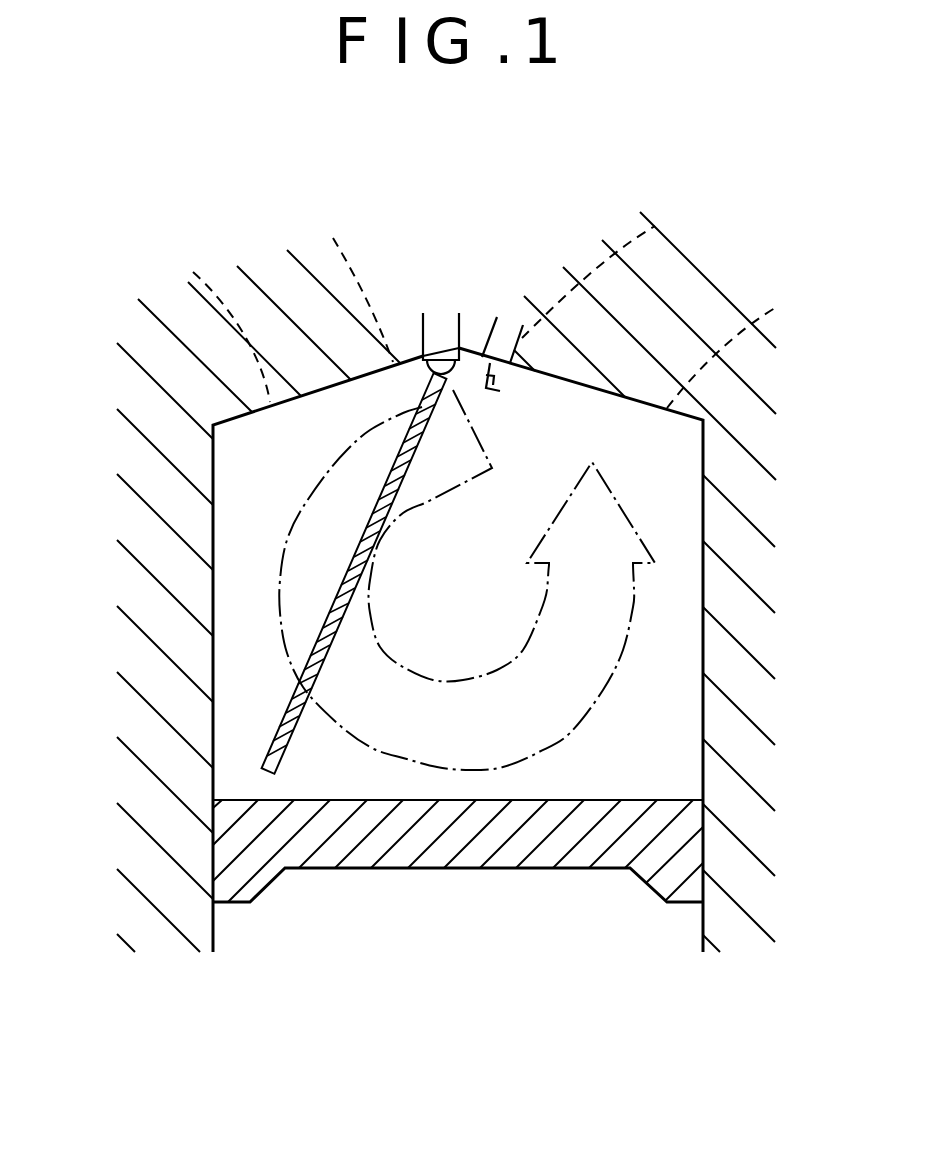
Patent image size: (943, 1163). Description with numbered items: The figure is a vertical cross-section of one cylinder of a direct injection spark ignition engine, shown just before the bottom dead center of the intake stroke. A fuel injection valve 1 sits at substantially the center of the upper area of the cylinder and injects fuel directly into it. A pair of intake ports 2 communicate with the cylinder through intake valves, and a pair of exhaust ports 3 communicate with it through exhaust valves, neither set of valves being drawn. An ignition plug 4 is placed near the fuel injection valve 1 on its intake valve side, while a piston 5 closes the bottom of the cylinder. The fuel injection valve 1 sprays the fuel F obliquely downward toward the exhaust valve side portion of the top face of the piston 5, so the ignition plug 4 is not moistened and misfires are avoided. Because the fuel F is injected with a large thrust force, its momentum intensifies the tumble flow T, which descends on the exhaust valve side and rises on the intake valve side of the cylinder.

The fuel injection valve 1 is at (445, 330).
The intake port 2 is at (586, 272).
The exhaust port 3 is at (352, 267).
The ignition plug 4 is at (506, 335).
The piston 5 is at (510, 857).
The tumble flow T is at (440, 494).
The injected fuel F is at (288, 740).